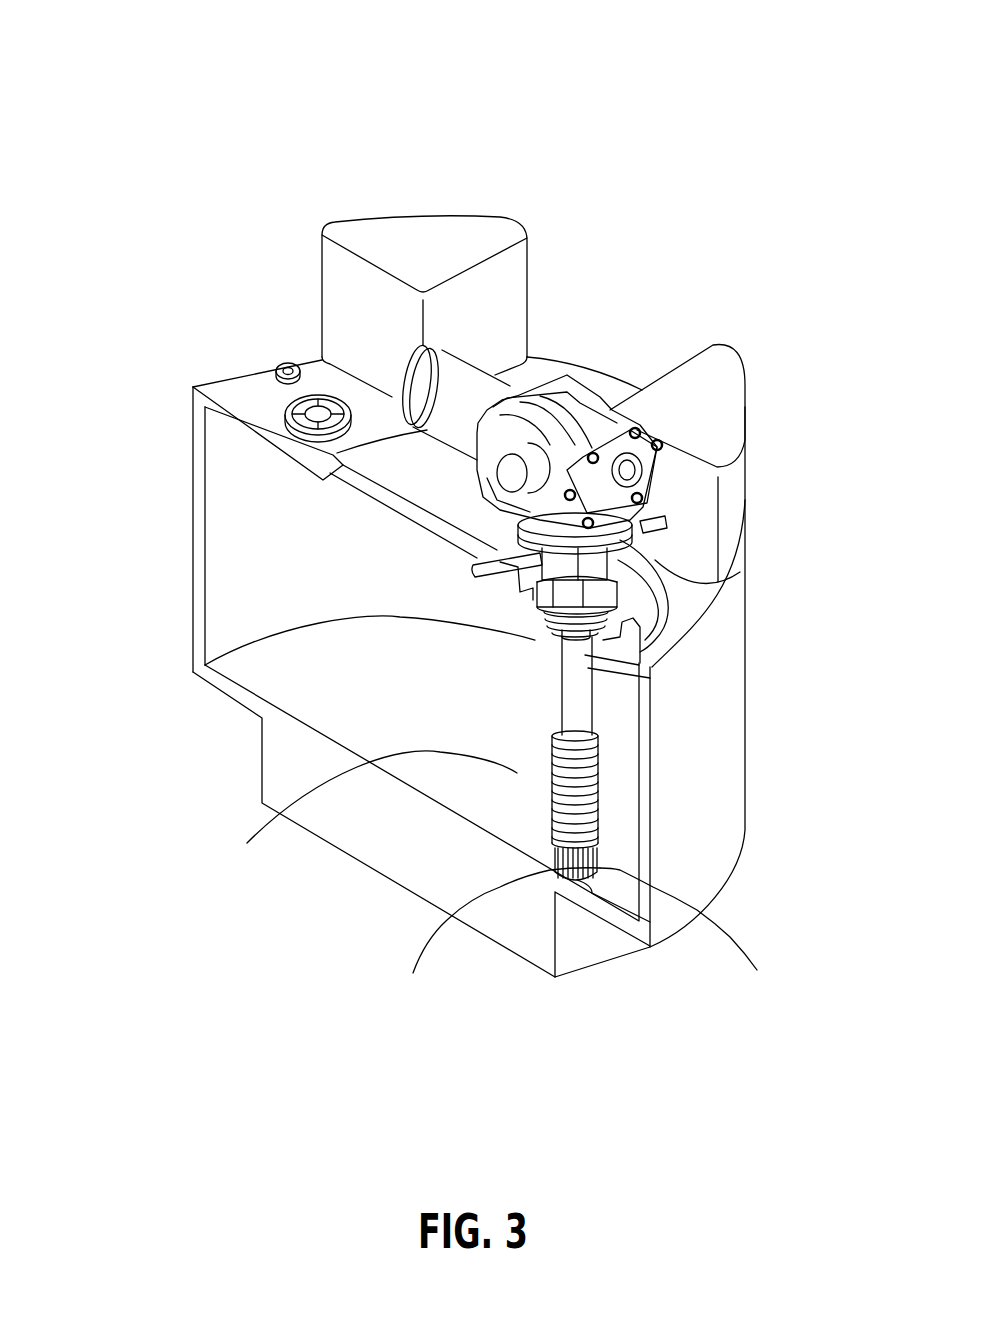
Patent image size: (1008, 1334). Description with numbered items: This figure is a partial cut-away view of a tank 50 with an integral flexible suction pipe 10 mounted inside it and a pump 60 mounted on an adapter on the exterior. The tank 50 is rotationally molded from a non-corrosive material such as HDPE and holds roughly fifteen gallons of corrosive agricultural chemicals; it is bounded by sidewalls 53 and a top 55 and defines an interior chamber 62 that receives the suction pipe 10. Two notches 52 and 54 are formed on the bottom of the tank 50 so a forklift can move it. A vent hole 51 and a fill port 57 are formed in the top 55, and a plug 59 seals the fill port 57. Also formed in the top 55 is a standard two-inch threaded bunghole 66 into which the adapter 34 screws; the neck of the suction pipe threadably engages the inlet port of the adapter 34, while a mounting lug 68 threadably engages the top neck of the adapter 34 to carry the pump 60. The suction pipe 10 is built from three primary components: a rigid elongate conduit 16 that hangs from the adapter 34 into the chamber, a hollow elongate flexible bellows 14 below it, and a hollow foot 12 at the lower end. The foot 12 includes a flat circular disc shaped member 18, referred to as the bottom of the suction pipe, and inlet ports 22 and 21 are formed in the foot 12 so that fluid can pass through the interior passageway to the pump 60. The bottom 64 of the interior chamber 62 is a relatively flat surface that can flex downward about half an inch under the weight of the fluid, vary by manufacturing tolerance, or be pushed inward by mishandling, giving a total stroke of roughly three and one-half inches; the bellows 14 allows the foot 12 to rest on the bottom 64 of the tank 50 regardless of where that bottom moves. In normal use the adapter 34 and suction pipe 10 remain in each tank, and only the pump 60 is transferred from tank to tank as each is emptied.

The tank 50 is at (473, 130).
The vent hole 51 is at (288, 368).
The fill port 57 is at (303, 400).
The plug 59 is at (318, 413).
The top 55 is at (267, 440).
The sidewalls 53 is at (197, 537).
The notch 52 is at (226, 692).
The interior chamber 62 is at (306, 579).
The bunghole 66 is at (533, 602).
The pump 60 is at (587, 410).
The mounting lug 68 is at (592, 568).
The adapter 34 is at (605, 618).
The rigid elongate conduit 16 is at (577, 702).
The integral flexible suction pipe 10 is at (630, 752).
The hollow elongate flexible bellows 14 is at (578, 793).
The hollow foot 12 is at (578, 860).
The bottom of the interior chamber 64 is at (370, 811).
The inlet port 21 is at (496, 935).
The inlet port 22 is at (694, 928).
The flat circular disc shaped member 18 is at (655, 932).
The notch 54 is at (557, 948).